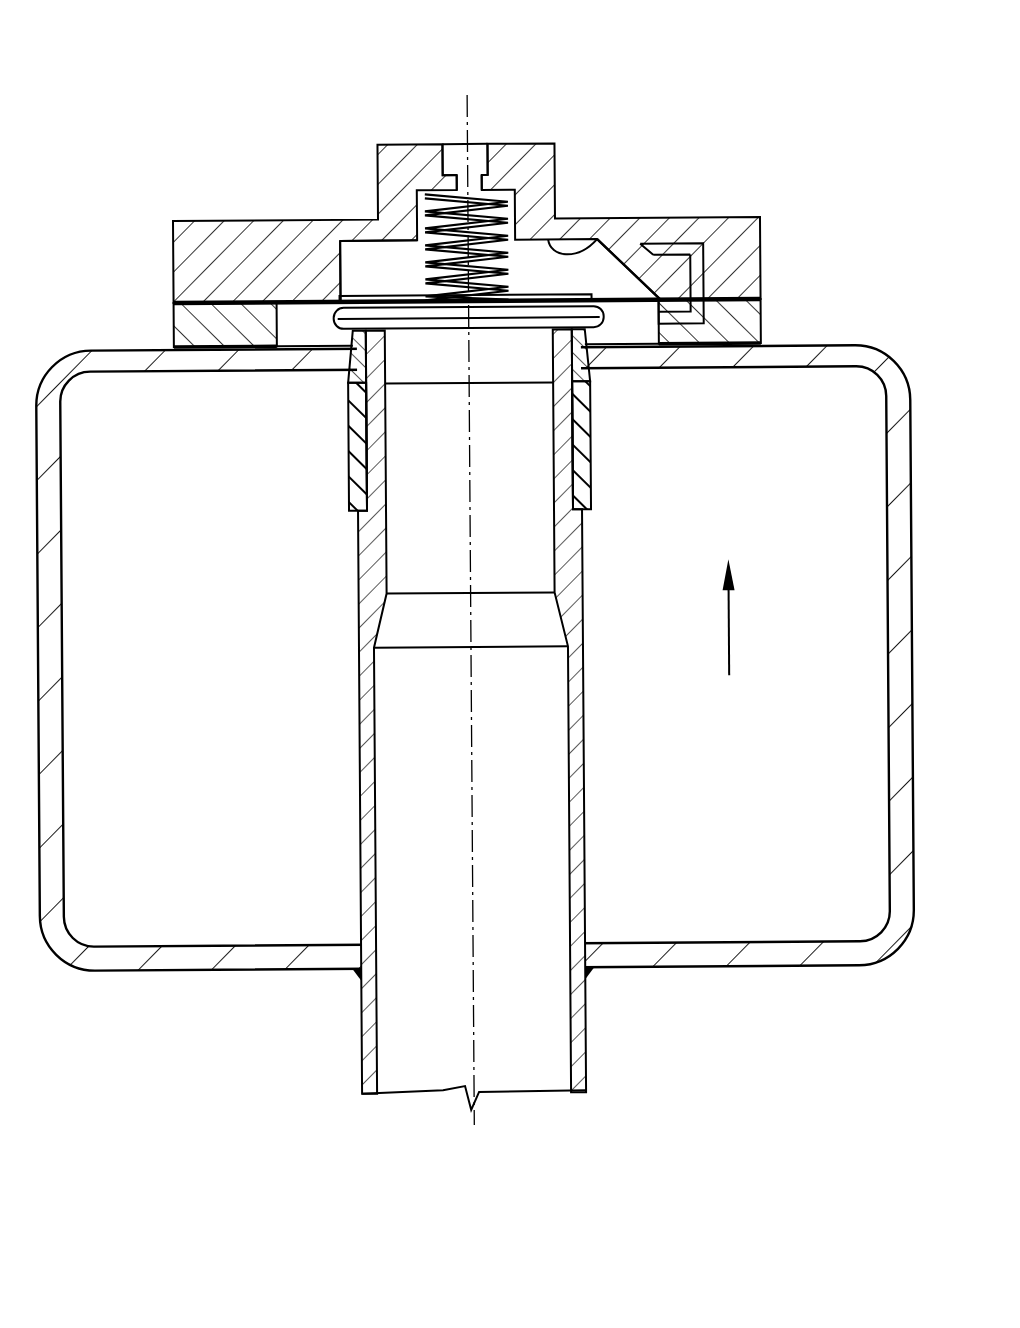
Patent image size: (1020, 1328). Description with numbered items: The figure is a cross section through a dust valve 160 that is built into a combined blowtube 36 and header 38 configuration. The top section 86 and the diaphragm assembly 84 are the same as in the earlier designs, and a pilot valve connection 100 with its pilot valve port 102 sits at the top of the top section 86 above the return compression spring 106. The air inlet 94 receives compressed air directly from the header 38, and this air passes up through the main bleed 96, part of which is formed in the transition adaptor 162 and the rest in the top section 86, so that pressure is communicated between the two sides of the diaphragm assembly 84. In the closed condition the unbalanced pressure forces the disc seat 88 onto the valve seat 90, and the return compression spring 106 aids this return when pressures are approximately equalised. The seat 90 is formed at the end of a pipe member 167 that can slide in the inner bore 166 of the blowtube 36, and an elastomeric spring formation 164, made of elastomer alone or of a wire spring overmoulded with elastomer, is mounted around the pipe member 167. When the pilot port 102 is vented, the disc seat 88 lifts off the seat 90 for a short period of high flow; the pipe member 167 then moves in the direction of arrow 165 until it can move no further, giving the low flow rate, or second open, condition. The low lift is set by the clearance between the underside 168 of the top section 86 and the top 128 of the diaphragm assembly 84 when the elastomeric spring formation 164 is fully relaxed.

The dust valve 160 is at (232, 110).
The blowtube 36 is at (588, 822).
The header 38 is at (151, 969).
The diaphragm assembly 84 is at (326, 284).
The top section 86 is at (727, 230).
The disc seat 88 is at (500, 333).
The valve seat 90 is at (375, 334).
The air inlet 94 is at (306, 365).
The main bleed 96 is at (709, 281).
The pilot valve connection 100 is at (484, 158).
The pilot valve port 102 is at (458, 160).
The return compression spring 106 is at (553, 240).
The top of the diaphragm assembly 128 is at (356, 292).
The transition adaptor 162 is at (751, 331).
The elastomeric spring formation 164 is at (357, 480).
The arrow 165 is at (755, 617).
The inner bore 166 is at (573, 728).
The pipe member 167 is at (378, 461).
The underside of the top section 168 is at (606, 240).